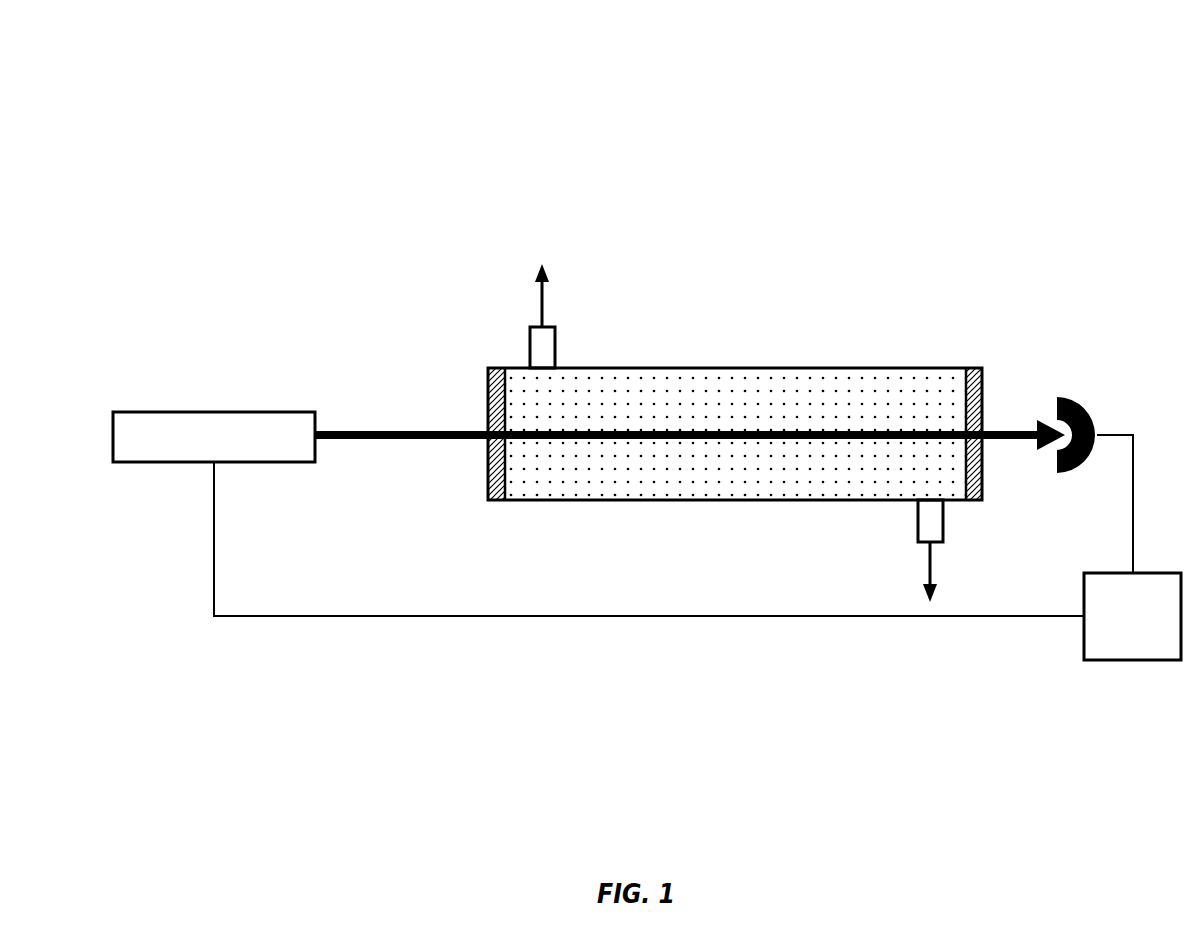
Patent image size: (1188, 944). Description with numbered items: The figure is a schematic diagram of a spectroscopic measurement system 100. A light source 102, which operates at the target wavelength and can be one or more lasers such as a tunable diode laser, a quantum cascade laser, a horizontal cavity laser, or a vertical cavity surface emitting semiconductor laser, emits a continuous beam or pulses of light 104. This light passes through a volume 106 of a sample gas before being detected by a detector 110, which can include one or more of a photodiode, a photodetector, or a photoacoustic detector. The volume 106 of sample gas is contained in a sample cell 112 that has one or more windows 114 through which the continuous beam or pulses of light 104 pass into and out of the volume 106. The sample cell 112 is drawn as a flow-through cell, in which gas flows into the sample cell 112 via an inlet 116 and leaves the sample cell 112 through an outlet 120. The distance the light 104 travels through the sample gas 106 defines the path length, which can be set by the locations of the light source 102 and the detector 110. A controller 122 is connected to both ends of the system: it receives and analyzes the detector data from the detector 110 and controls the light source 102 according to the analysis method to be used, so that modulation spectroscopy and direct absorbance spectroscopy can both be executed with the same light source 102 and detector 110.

The system 100 is at (138, 113).
The light source 102 is at (170, 452).
The continuous beam or pulses of light 104 is at (414, 446).
The volume of a sample gas 106 is at (735, 464).
The detector 110 is at (1077, 397).
The sample cell 112 is at (562, 485).
The windows 114 is at (496, 364).
The inlet 116 is at (914, 523).
The outlet 120 is at (560, 348).
The controller 122 is at (1150, 632).